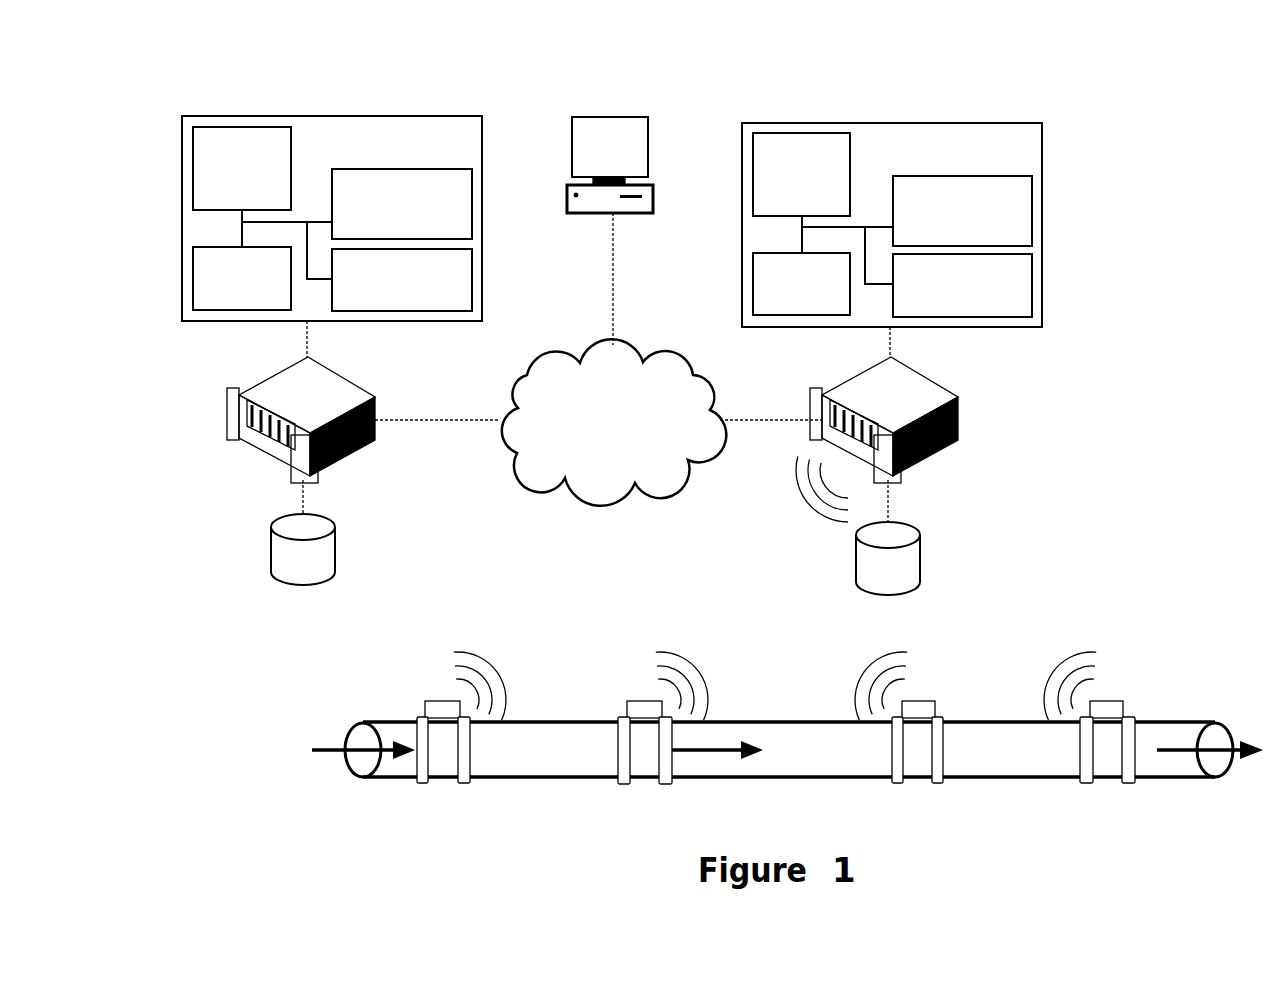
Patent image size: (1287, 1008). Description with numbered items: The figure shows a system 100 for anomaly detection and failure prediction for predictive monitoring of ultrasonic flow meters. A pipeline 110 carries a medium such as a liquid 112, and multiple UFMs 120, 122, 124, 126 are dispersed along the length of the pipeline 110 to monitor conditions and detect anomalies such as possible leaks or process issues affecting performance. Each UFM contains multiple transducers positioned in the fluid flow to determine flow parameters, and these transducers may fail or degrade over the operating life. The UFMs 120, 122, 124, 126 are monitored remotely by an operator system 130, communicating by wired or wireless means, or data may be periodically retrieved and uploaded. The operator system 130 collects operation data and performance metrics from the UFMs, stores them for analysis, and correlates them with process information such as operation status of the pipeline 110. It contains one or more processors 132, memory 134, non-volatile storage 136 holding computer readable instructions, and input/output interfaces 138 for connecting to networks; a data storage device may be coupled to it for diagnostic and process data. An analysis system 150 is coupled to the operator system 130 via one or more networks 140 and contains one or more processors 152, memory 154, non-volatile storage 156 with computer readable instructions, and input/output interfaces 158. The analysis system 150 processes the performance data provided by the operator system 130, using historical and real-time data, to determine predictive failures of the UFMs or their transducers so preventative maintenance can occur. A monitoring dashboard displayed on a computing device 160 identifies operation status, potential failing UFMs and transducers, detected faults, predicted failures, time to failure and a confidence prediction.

The system 100 is at (1110, 77).
The pipeline 110 is at (560, 777).
The liquid 112 is at (322, 762).
The UFM 120 is at (425, 702).
The UFM 122 is at (628, 702).
The UFM 124 is at (937, 702).
The UFM 126 is at (1123, 702).
The operator system 130 is at (960, 422).
The processors 132 is at (801, 174).
The memory 134 is at (962, 211).
The non-volatile storage 136 is at (962, 285).
The input/output interfaces 138 is at (801, 284).
The networks 140 is at (614, 422).
The analysis system 150 is at (237, 412).
The processors 152 is at (242, 168).
The memory 154 is at (402, 204).
The non-volatile storage 156 is at (402, 280).
The input/output interfaces 158 is at (242, 278).
The computing device 160 is at (580, 115).